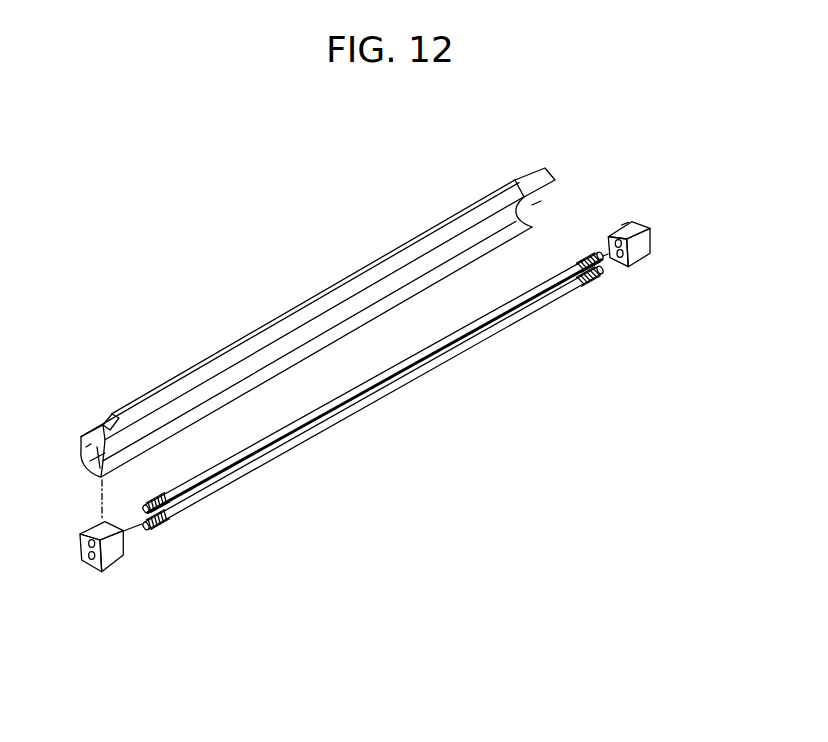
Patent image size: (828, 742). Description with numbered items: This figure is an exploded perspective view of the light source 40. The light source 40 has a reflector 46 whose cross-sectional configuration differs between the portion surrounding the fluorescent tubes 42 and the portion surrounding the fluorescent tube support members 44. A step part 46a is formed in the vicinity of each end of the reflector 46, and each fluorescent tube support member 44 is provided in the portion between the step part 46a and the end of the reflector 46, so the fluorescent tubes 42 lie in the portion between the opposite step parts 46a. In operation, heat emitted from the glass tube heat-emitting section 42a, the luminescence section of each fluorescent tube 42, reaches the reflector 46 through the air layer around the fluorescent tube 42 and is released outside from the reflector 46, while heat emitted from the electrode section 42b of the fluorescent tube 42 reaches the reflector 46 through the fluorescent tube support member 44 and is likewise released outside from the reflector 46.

The light source 40 is at (219, 257).
The fluorescent tube 42 is at (381, 362).
The glass tube heat-emitting section 42a is at (220, 485).
The electrode section 42b is at (163, 519).
The fluorescent tube support member 44 is at (637, 258).
The reflector 46 is at (312, 316).
The step part 46a is at (108, 413).